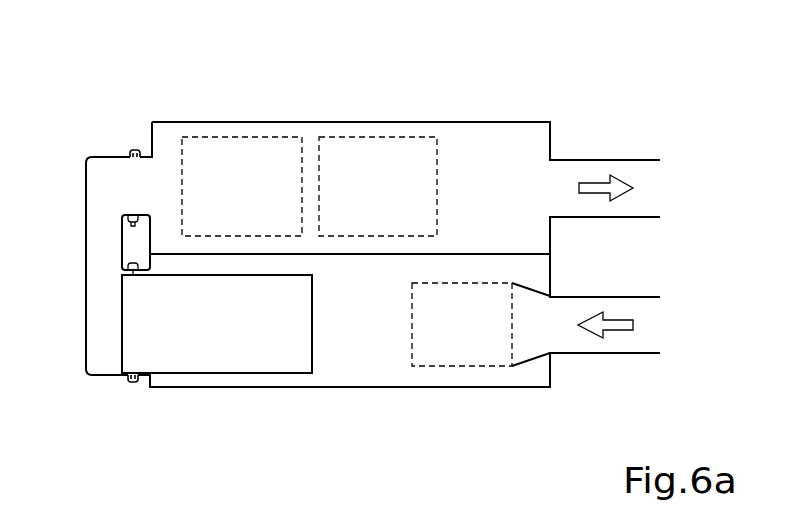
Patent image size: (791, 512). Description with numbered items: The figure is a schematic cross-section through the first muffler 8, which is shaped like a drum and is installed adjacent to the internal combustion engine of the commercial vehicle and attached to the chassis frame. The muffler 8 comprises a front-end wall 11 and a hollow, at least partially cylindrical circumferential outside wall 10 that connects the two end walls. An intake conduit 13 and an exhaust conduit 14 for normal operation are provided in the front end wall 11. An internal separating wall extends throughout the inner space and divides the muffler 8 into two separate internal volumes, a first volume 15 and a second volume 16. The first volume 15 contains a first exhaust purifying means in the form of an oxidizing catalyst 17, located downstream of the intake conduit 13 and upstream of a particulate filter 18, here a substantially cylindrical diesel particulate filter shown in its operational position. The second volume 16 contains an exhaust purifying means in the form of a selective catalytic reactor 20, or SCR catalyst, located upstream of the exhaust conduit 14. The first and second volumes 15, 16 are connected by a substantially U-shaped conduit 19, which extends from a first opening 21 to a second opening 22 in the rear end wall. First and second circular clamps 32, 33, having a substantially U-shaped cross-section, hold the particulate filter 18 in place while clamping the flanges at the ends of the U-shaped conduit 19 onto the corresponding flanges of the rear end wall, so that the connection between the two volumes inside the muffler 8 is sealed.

The first muffler 8 is at (103, 83).
The circumferential outside wall 10 is at (443, 121).
The front-end wall 11 is at (550, 139).
The intake conduit 13 is at (658, 328).
The exhaust conduit 14 is at (658, 188).
The first volume 15 is at (347, 333).
The second volume 16 is at (475, 198).
The oxidizing catalyst 17 is at (452, 343).
The particulate filter 18 is at (203, 335).
The U-shaped conduit 19 is at (86, 255).
The selective catalytic reactor 20 is at (360, 208).
The first opening 21 is at (147, 373).
The second opening 22 is at (142, 158).
The first circular clamp 32 is at (131, 385).
The second circular clamp 33 is at (135, 150).